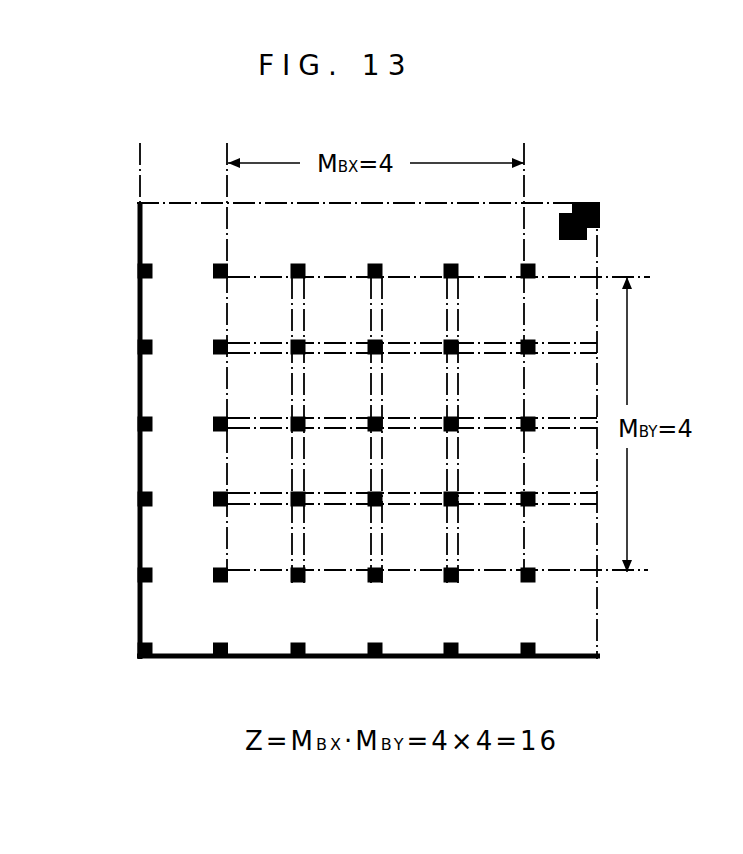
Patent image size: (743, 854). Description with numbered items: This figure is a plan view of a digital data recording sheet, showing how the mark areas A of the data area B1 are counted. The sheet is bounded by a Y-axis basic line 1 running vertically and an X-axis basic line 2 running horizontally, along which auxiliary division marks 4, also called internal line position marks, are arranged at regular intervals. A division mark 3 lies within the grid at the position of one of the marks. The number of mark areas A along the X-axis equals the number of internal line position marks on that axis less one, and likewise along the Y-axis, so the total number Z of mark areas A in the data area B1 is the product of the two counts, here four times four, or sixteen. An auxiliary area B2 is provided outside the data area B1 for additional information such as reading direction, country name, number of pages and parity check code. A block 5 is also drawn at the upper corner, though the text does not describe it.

The Y-axis basic line 1 is at (140, 477).
The X-axis basic line 2 is at (477, 658).
The division mark 3 is at (305, 583).
The auxiliary division marks 4 is at (140, 265).
The marker 5 is at (600, 215).
The mark area A is at (484, 292).
The data area B1 is at (392, 277).
The auxiliary area B2 is at (458, 217).